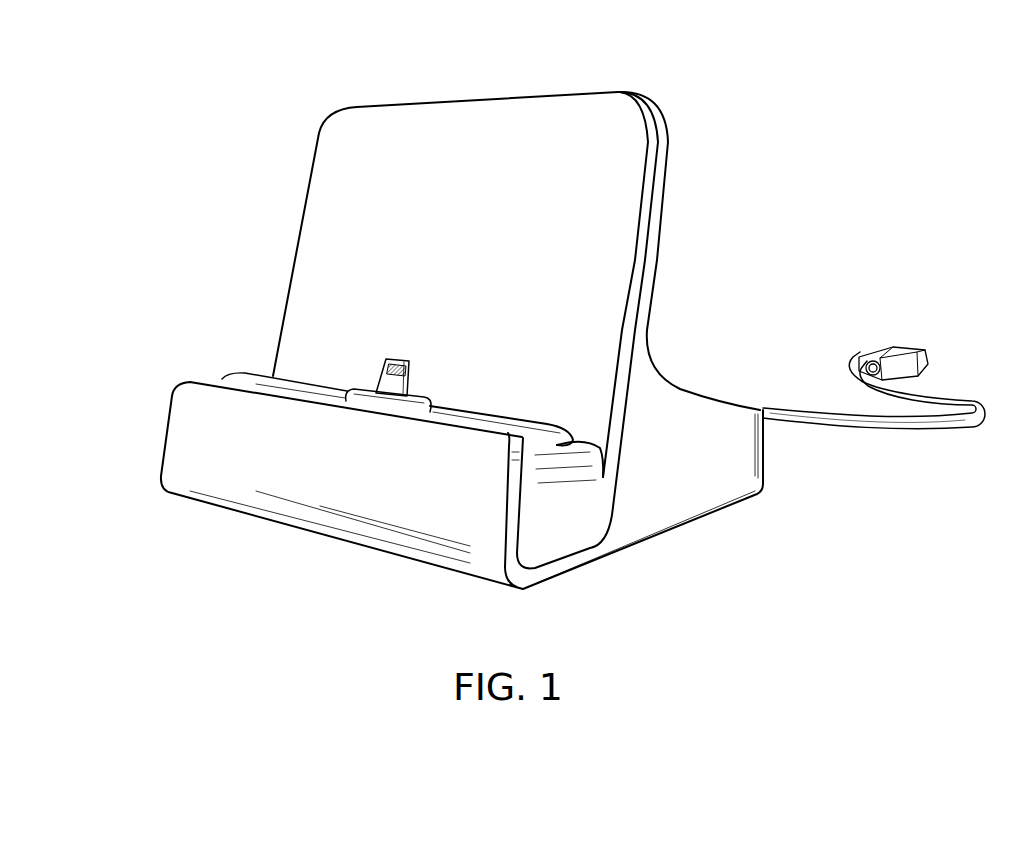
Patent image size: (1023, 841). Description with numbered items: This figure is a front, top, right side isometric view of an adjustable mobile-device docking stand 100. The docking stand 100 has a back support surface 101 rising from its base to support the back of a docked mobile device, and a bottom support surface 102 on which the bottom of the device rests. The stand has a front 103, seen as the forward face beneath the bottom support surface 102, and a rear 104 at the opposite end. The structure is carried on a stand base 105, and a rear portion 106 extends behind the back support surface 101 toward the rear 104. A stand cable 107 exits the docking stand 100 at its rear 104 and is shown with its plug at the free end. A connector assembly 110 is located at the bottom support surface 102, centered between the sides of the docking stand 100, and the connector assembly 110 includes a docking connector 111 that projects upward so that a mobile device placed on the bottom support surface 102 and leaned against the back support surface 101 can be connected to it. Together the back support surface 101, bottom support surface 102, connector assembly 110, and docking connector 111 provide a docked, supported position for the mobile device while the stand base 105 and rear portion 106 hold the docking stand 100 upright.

The adjustable mobile-device docking stand 100 is at (177, 103).
The back support surface 101 is at (574, 112).
The bottom support surface 102 is at (547, 432).
The front 103 is at (420, 482).
The rear 104 is at (765, 450).
The stand base 105 is at (672, 532).
The rear portion 106 is at (678, 412).
The stand cable 107 is at (952, 427).
The connector assembly 110 is at (370, 402).
The docking connector 111 is at (387, 382).